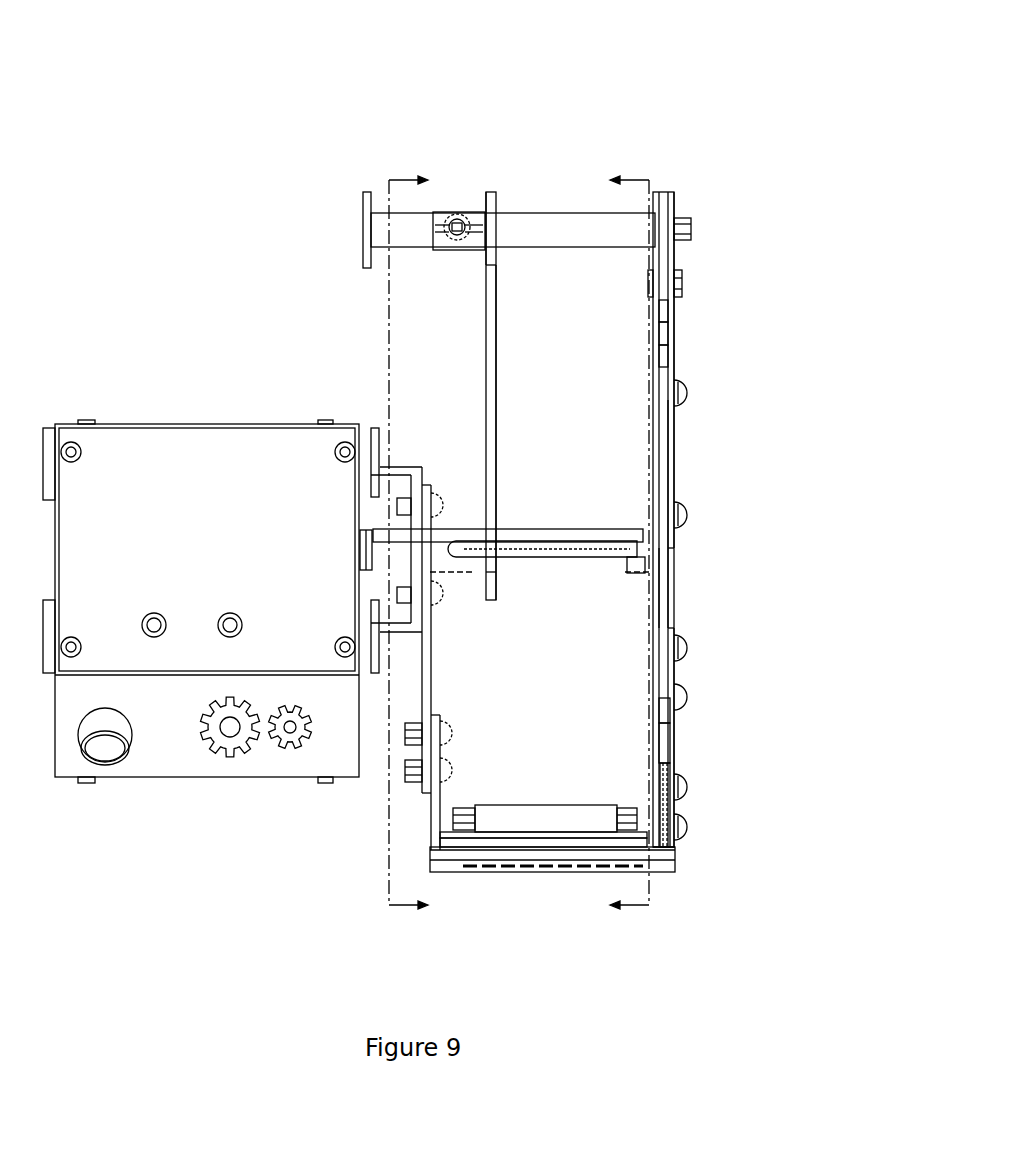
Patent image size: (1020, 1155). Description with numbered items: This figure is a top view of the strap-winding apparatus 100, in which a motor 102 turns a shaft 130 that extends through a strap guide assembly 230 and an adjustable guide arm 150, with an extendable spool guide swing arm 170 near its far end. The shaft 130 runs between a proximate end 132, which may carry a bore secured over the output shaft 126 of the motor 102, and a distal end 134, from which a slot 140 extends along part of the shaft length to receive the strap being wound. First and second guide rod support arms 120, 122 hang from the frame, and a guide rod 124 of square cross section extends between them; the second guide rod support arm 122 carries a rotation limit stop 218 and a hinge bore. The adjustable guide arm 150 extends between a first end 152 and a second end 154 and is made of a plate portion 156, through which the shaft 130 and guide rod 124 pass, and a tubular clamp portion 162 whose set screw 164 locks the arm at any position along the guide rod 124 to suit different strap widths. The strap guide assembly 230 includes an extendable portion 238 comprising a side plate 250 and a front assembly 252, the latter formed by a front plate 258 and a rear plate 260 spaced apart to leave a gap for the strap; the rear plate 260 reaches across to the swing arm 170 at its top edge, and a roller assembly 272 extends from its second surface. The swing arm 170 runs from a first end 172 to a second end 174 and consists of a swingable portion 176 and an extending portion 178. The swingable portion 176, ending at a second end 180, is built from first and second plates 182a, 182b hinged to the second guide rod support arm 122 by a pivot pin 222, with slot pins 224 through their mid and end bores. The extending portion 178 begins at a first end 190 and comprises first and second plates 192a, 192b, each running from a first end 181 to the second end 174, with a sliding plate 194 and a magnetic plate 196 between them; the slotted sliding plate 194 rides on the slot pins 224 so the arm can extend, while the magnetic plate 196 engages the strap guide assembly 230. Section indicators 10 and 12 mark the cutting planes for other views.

The section line 10 is at (630, 539).
The section line 12 is at (403, 539).
The apparatus 100 is at (655, 78).
The motor 102 is at (167, 767).
The first guide rod support arm 120 is at (365, 195).
The second guide rod support arm 122 is at (663, 192).
The guide rod 124 is at (567, 217).
The output shaft 126 is at (370, 548).
The shaft 130 is at (613, 537).
The proximate end 132 is at (370, 533).
The distal end 134 is at (623, 548).
The slot 140 is at (660, 565).
The adjustable guide arm 150 is at (497, 207).
The first end 152 is at (492, 190).
The second end 154 is at (492, 600).
The plate portion 156 is at (497, 290).
The tubular clamp portion 162 is at (447, 212).
The set screw 164 is at (457, 219).
The extendable spool guide swing arm 170 is at (675, 765).
The first end 172 is at (673, 192).
The second end 174 is at (675, 847).
The swingable portion 176 is at (677, 430).
The extending portion 178 is at (675, 803).
The second end 180 is at (672, 552).
The first end 181 is at (677, 627).
The first plate 182a is at (673, 322).
The second plate 182b is at (659, 362).
The first end 190 is at (665, 340).
The first plate 192a is at (670, 722).
The second plate 192b is at (655, 738).
The sliding plate 194 is at (665, 593).
The magnetic plate 196 is at (665, 827).
The rotation limit stop 218 is at (682, 287).
The pivot pin 222 is at (691, 229).
The slot pins 224 is at (688, 393).
The strap guide assembly 230 is at (535, 898).
The extendable portion 238 is at (675, 872).
The side plate 250 is at (440, 835).
The front assembly 252 is at (567, 870).
The front plate 258 is at (437, 857).
The rear plate 260 is at (437, 849).
The roller assembly 272 is at (498, 825).